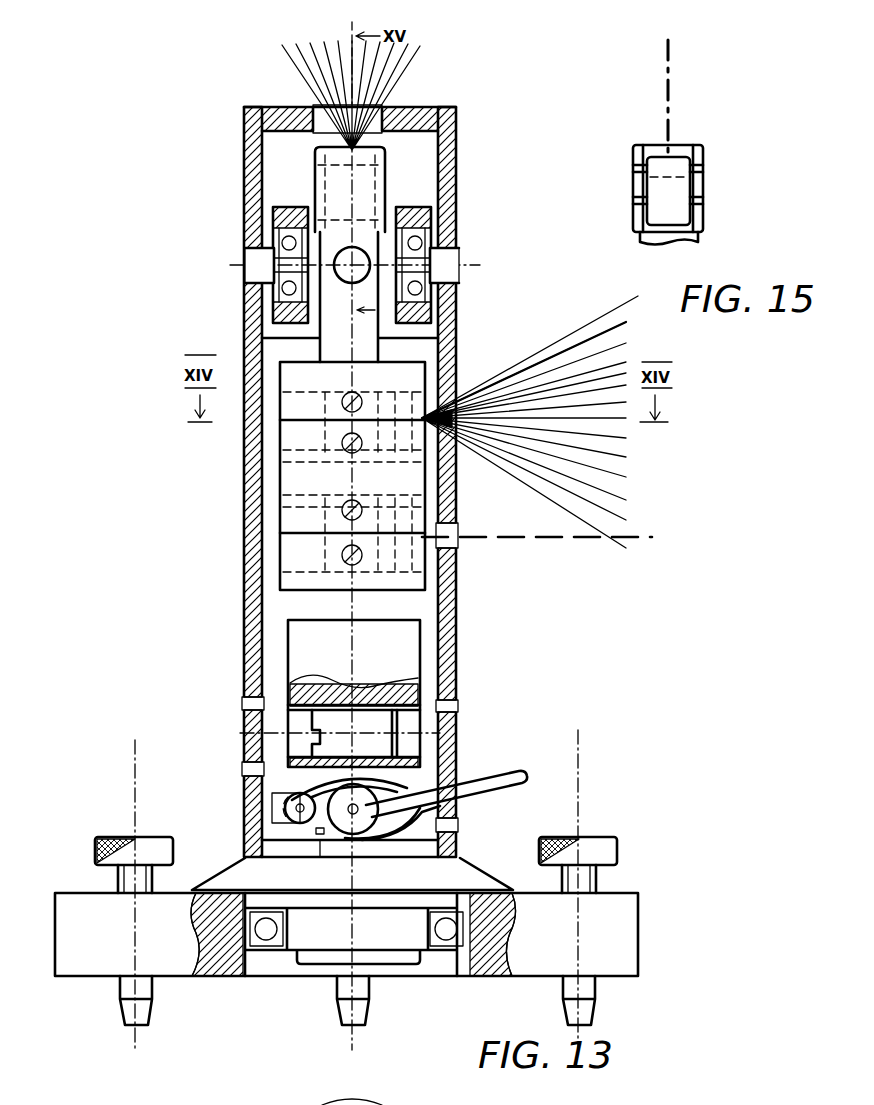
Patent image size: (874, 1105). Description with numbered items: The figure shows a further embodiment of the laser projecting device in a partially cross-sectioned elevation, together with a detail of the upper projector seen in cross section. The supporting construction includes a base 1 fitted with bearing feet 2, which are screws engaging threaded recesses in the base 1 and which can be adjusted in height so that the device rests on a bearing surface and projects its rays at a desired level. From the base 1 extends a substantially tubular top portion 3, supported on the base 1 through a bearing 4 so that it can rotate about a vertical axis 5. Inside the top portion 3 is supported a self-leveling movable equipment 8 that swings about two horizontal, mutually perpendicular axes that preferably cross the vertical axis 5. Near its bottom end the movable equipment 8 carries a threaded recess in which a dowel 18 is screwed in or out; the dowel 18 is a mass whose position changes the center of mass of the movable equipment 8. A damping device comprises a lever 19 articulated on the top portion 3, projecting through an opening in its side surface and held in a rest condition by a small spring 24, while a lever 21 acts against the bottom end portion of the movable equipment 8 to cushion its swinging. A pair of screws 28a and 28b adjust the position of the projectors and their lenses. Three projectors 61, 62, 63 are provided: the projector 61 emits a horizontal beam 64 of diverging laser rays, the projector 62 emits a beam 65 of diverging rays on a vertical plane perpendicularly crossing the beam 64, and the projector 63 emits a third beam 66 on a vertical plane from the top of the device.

In FIG. 13, the base 1 is at (640, 955).
In FIG. 13, the bearing feet 2 is at (393, 1010).
In FIG. 13, the top portion 3 is at (456, 678).
In FIG. 13, the bearing 4 is at (256, 977).
In FIG. 13, the vertical axis 5 is at (355, 660).
In FIG. 13, the self-leveling movable equipment 8 is at (262, 338).
In FIG. 15, the self-leveling movable equipment 8 is at (700, 240).
In FIG. 13, the dowel 18 is at (328, 738).
In FIG. 13, the lever 19 is at (485, 778).
In FIG. 13, the lever 21 is at (286, 795).
In FIG. 13, the small spring 24 is at (440, 822).
In FIG. 13, the screw 28a is at (338, 452).
In FIG. 13, the screw 28b is at (338, 412).
In FIG. 13, the projector 61 is at (290, 552).
In FIG. 13, the projector 62 is at (262, 415).
In FIG. 13, the projector 63 is at (370, 183).
In FIG. 15, the projector 63 is at (672, 195).
In FIG. 13, the horizontal beam 64 is at (570, 540).
In FIG. 13, the beam 65 is at (575, 318).
In FIG. 13, the third beam 66 is at (398, 62).
In FIG. 15, the third beam 66 is at (672, 125).